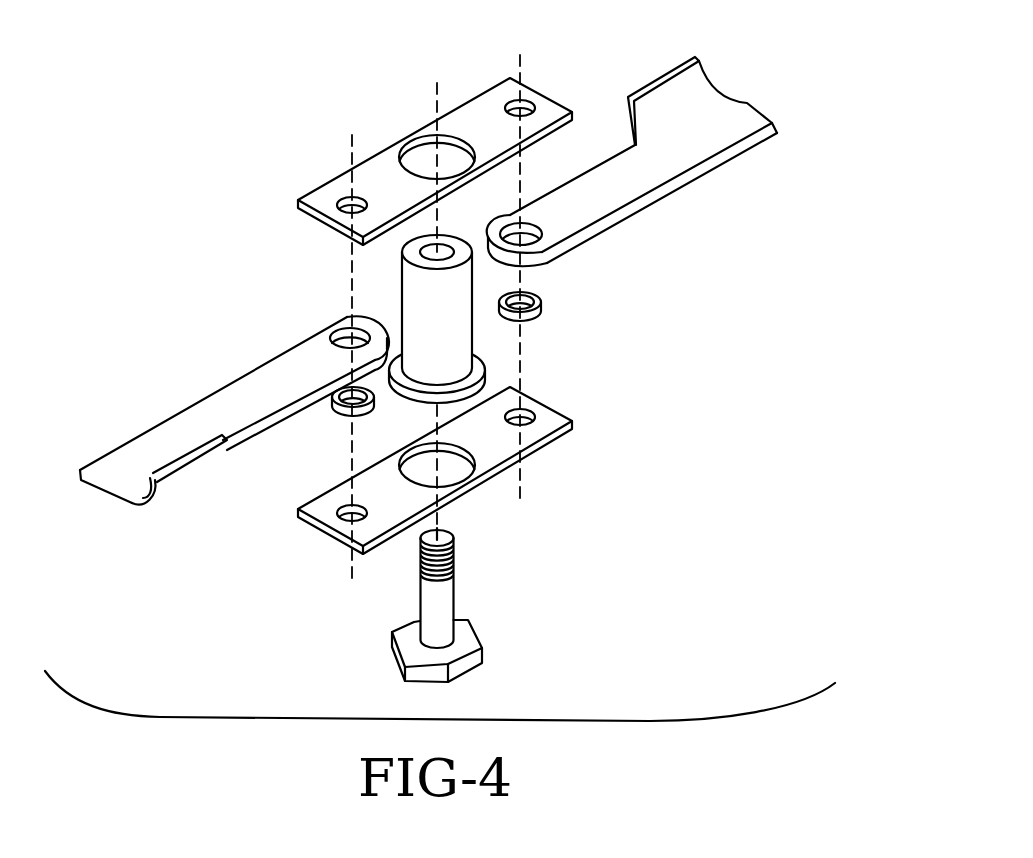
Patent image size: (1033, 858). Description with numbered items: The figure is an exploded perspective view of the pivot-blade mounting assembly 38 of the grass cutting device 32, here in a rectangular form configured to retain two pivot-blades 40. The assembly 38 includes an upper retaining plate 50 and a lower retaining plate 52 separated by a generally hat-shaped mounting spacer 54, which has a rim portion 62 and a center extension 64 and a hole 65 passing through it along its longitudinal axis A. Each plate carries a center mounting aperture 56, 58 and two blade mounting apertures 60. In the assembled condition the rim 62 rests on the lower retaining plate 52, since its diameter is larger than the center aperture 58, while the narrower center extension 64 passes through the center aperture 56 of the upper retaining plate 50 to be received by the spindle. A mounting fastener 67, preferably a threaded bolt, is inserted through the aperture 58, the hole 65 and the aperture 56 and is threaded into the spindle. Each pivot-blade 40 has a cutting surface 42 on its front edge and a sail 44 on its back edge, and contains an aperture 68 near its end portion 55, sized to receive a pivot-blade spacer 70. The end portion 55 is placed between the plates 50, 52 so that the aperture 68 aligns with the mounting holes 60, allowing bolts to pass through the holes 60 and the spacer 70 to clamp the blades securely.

The grass cutting device 32 is at (152, 162).
The pivot-blade mounting assembly 38 is at (633, 52).
The pivot-blade 40 is at (430, 278).
The cutting surface 42 is at (745, 152).
The sail 44 is at (697, 58).
The upper retaining plate 50 is at (325, 185).
The lower retaining plate 52 is at (325, 528).
The mounting spacer 54 is at (440, 272).
The end portion 55 is at (493, 240).
The center mounting aperture 56 is at (437, 268).
The center mounting aperture 58 is at (446, 382).
The blade mounting aperture 60 is at (527, 94).
The rim portion 62 is at (402, 386).
The center extension 64 is at (401, 317).
The hole 65 is at (459, 183).
The mounting fastener 67 is at (468, 634).
The aperture 68 is at (518, 224).
The pivot-blade spacer 70 is at (542, 303).
The longitudinal axis A is at (438, 522).